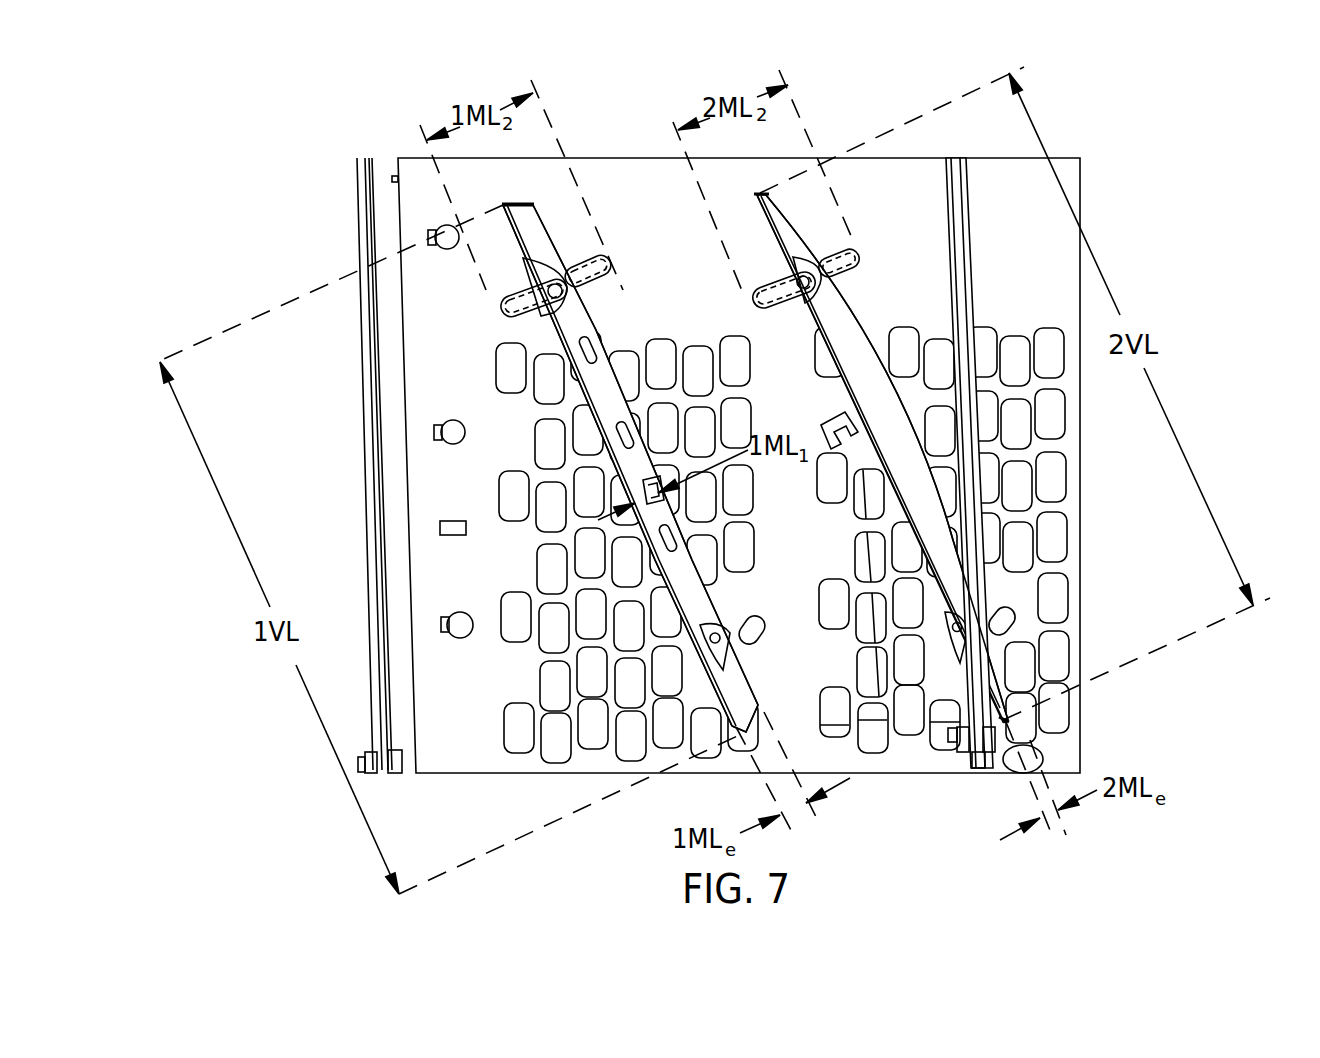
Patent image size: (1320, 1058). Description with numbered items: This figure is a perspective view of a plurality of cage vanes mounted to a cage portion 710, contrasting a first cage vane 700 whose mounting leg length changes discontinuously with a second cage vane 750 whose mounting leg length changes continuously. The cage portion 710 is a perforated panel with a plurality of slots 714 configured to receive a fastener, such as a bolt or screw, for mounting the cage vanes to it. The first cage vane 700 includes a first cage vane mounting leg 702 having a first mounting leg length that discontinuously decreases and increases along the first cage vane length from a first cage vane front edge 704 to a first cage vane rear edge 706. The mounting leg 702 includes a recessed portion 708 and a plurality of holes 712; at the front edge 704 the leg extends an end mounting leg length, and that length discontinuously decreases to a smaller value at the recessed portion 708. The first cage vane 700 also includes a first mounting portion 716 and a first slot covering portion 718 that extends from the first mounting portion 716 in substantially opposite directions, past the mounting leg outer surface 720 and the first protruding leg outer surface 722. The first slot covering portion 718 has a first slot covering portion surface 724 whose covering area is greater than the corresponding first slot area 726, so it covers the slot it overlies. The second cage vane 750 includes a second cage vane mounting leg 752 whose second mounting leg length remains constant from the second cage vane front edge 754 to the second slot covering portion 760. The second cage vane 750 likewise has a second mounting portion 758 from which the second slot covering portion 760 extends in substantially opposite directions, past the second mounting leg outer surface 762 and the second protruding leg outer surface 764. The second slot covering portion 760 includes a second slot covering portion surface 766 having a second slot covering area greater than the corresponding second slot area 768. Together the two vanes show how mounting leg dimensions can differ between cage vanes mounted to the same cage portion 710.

The first cage vane 700 is at (581, 461).
The first cage vane mounting leg 702 is at (580, 318).
The first cage vane front edge 704 is at (758, 712).
The first cage vane rear edge 706 is at (515, 205).
The recessed portion 708 is at (662, 497).
The cage portion 710 is at (427, 217).
The holes 712 is at (592, 351).
The slots 714 is at (570, 262).
The first mounting portion 716 is at (537, 289).
The first slot covering portion 718 is at (549, 297).
The mounting leg outer surface 720 is at (548, 232).
The first protruding leg outer surface 722 is at (512, 322).
The first slot covering portion surface 724 is at (497, 309).
The first slot area 726 is at (610, 274).
The second cage vane 750 is at (953, 444).
The second cage vane mounting leg 752 is at (845, 337).
The second cage vane front edge 754 is at (1010, 723).
The second mounting portion 758 is at (810, 284).
The second slot covering portion 760 is at (762, 310).
The second mounting leg outer surface 762 is at (795, 230).
The second protruding leg outer surface 764 is at (786, 258).
The second slot covering portion surface 766 is at (862, 268).
The second slot area 768 is at (781, 308).